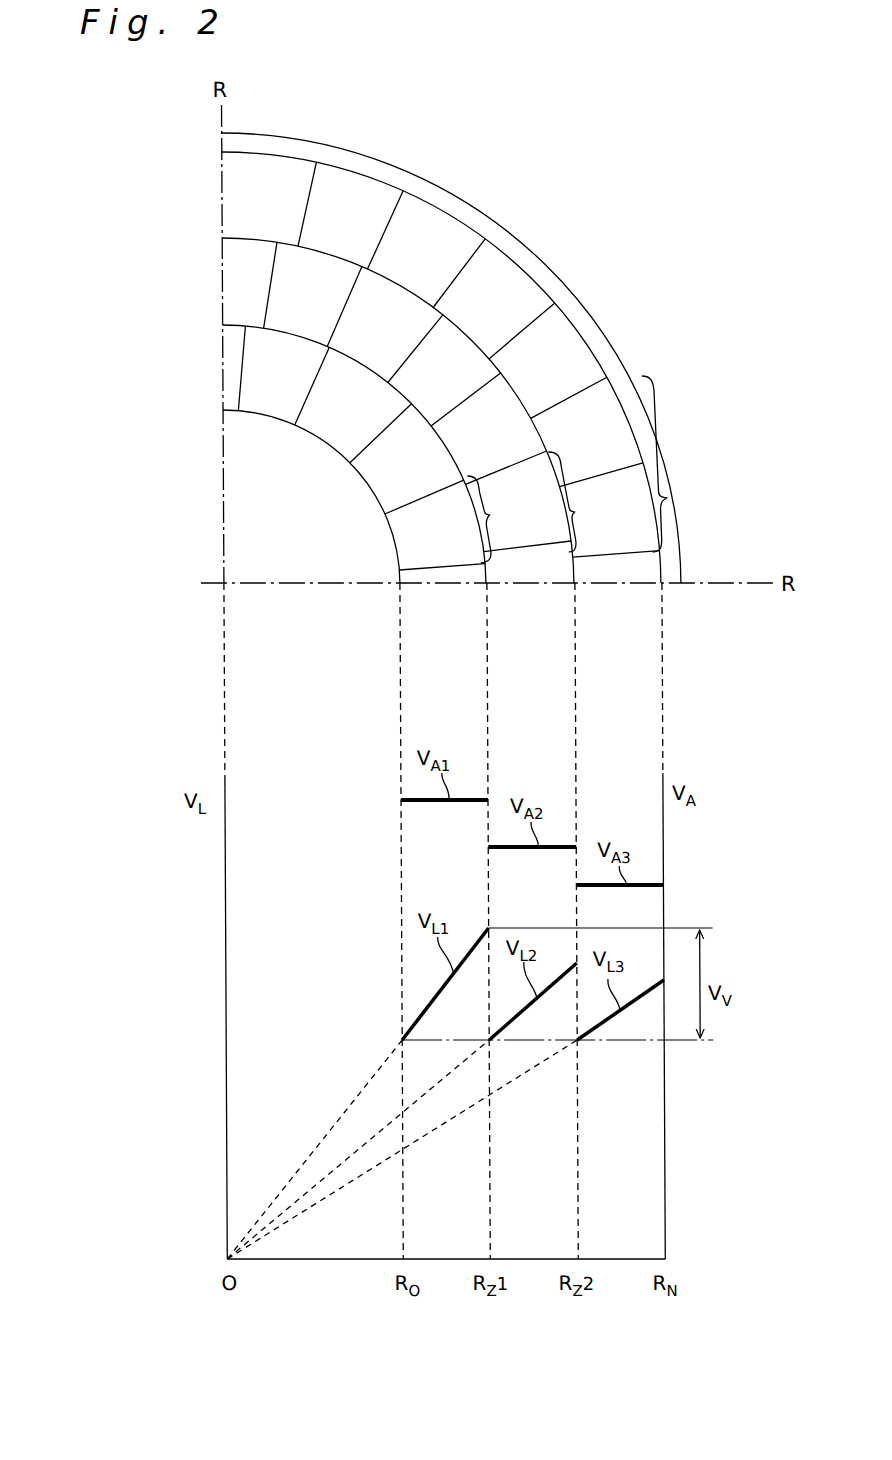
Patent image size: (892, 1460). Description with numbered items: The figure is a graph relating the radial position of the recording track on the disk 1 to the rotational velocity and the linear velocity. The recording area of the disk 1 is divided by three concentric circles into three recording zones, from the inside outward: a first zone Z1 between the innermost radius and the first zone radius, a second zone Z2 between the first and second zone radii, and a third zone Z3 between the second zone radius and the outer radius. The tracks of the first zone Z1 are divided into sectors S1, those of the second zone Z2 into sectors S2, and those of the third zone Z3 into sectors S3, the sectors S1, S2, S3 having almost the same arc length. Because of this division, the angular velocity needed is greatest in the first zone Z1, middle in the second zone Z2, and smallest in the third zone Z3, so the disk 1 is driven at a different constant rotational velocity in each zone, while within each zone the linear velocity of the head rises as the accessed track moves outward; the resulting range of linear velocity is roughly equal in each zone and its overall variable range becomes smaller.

The disk 1 is at (430, 358).
The first zone Z1 is at (221, 410).
The second zone Z2 is at (221, 325).
The third zone Z3 is at (221, 152).
The sectors S1 is at (487, 515).
The sectors S2 is at (572, 512).
The sectors S3 is at (664, 498).